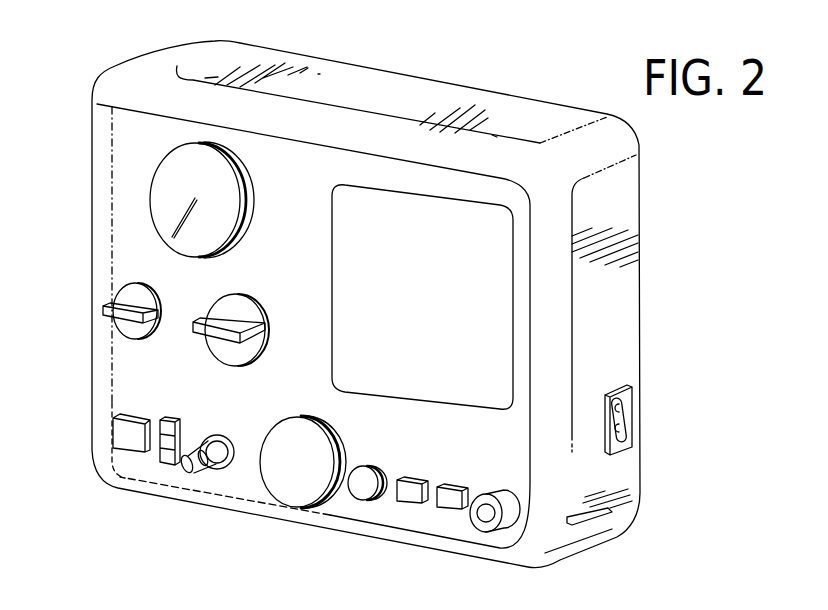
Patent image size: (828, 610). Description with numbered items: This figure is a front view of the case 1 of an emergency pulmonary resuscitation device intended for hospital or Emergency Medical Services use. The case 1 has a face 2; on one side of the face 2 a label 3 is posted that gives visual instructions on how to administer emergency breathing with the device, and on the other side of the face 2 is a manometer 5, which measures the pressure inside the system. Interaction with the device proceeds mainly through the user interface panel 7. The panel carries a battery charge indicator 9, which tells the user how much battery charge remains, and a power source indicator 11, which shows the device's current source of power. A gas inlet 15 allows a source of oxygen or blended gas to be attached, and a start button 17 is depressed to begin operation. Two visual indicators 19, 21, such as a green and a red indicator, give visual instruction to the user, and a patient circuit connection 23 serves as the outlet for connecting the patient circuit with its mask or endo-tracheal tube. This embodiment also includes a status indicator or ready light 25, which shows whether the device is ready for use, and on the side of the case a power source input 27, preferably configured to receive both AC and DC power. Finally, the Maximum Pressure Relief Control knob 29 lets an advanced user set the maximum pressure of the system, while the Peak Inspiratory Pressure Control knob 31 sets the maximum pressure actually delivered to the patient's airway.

The case 1 is at (640, 217).
The face 2 is at (125, 121).
The label 3 is at (346, 191).
The manometer 5 is at (152, 174).
The user interface panel 7 is at (88, 380).
The battery charge indicator 9 is at (120, 433).
The power source indicator 11 is at (163, 462).
The gas inlet 15 is at (205, 470).
The start button 17 is at (291, 487).
The visual indicator 19 is at (406, 478).
The visual indicator 21 is at (448, 485).
The patient circuit connection 23 is at (512, 510).
The status indicator 25 is at (361, 483).
The power source input 27 is at (627, 423).
The Maximum Pressure Relief Control knob 29 is at (103, 306).
The Peak Inspiratory Pressure Control knob 31 is at (253, 327).